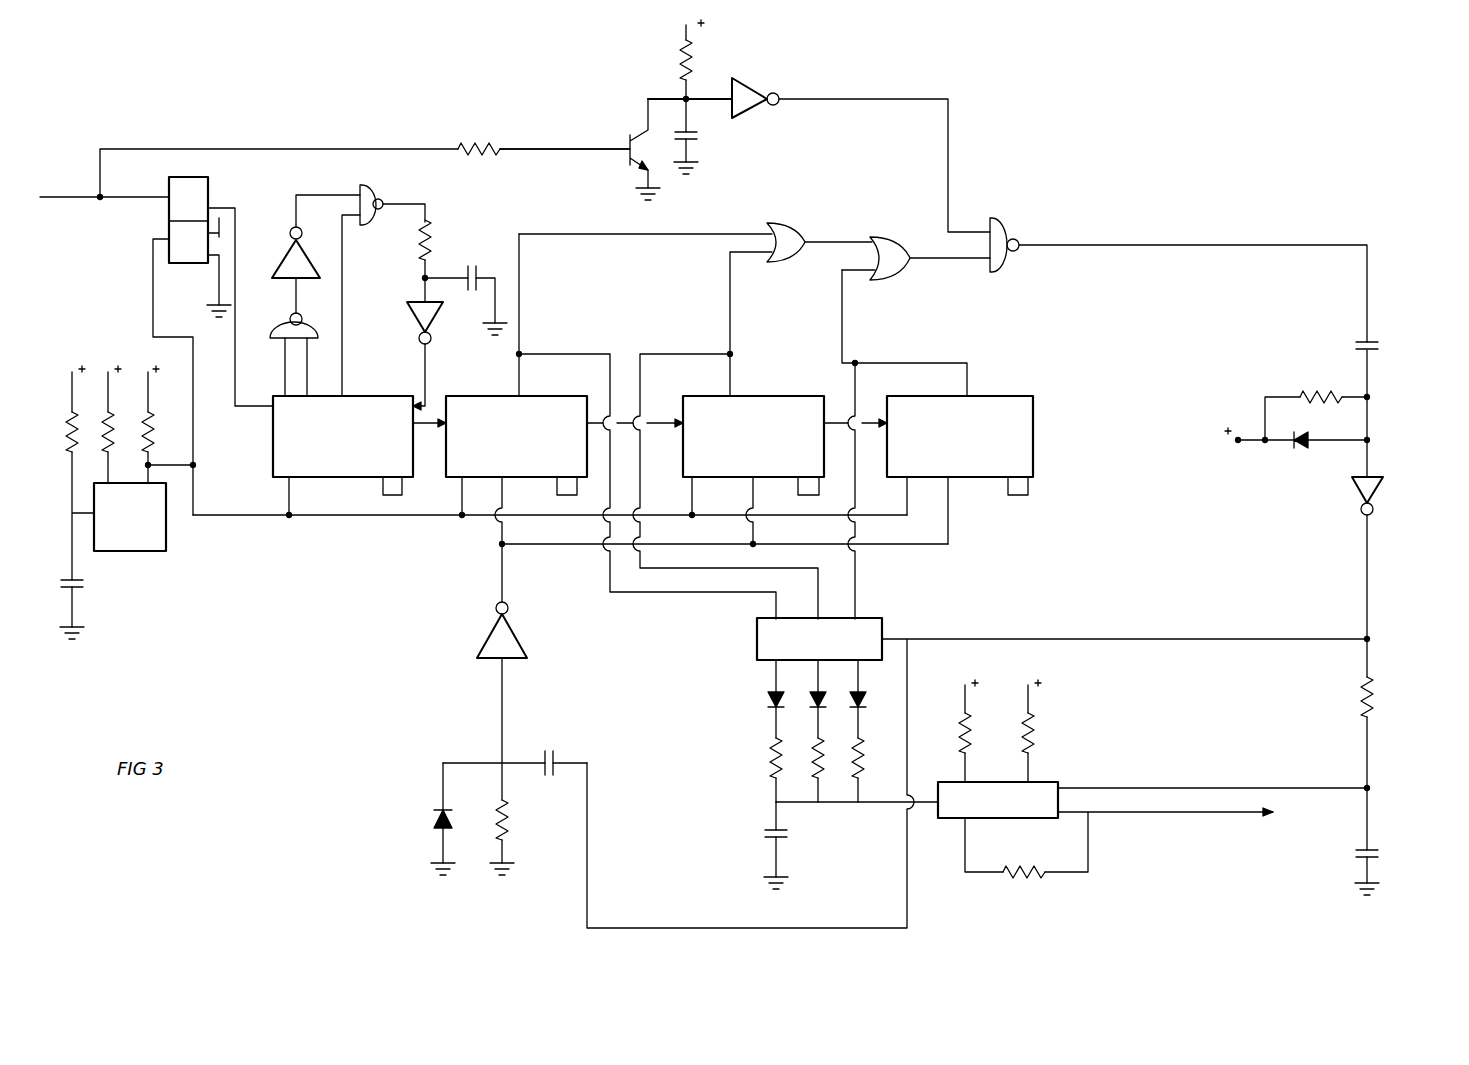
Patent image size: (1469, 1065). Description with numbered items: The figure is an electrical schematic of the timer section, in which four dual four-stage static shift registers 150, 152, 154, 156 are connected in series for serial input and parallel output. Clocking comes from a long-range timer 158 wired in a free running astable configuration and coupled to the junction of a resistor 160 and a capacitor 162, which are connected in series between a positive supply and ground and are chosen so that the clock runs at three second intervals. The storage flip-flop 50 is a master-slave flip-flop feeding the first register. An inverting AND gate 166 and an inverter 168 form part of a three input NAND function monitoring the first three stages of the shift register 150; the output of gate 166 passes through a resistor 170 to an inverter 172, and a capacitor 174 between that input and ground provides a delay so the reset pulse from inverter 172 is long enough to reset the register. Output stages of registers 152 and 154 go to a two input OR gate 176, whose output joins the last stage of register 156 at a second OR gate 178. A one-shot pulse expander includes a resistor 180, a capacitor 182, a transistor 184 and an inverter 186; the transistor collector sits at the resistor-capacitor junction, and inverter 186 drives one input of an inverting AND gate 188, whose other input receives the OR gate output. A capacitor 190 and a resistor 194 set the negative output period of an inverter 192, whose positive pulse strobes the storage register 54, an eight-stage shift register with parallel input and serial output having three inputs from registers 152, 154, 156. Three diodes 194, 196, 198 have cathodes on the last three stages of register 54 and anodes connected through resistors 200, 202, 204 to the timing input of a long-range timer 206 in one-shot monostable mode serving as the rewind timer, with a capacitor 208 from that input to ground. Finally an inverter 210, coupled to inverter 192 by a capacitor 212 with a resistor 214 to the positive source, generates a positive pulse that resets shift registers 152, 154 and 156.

The storage flip-flop 50 is at (169, 214).
The storage register 54 is at (876, 618).
The shift register 150 is at (270, 452).
The shift register 152 is at (490, 392).
The shift register 154 is at (768, 395).
The shift register 156 is at (1003, 380).
The timer 158 is at (166, 528).
The resistor 160 is at (63, 437).
The capacitor 162 is at (84, 590).
The inverting AND gate 166 is at (367, 195).
The inverter 168 is at (283, 260).
The resistor 170 is at (448, 254).
The inverter 172 is at (423, 318).
The capacitor 174 is at (466, 288).
The OR gate 176 is at (775, 222).
The OR gate 178 is at (873, 237).
The resistor 180 is at (680, 54).
The capacitor 182 is at (697, 140).
The transistor 184 is at (636, 132).
The inverter 186 is at (757, 90).
The inverting AND gate 188 is at (1000, 218).
The capacitor 190 is at (1357, 340).
The inverter 192 is at (1380, 490).
The resistor 194 is at (1322, 388).
The diode 196 is at (815, 706).
The diode 198 is at (866, 697).
The resistor 200 is at (760, 765).
The resistor 202 is at (812, 763).
The resistor 204 is at (872, 763).
The long-range timer 206 is at (1047, 780).
The capacitor 208 is at (787, 838).
The inverter 210 is at (487, 636).
The capacitor 212 is at (556, 757).
The resistor 214 is at (508, 808).